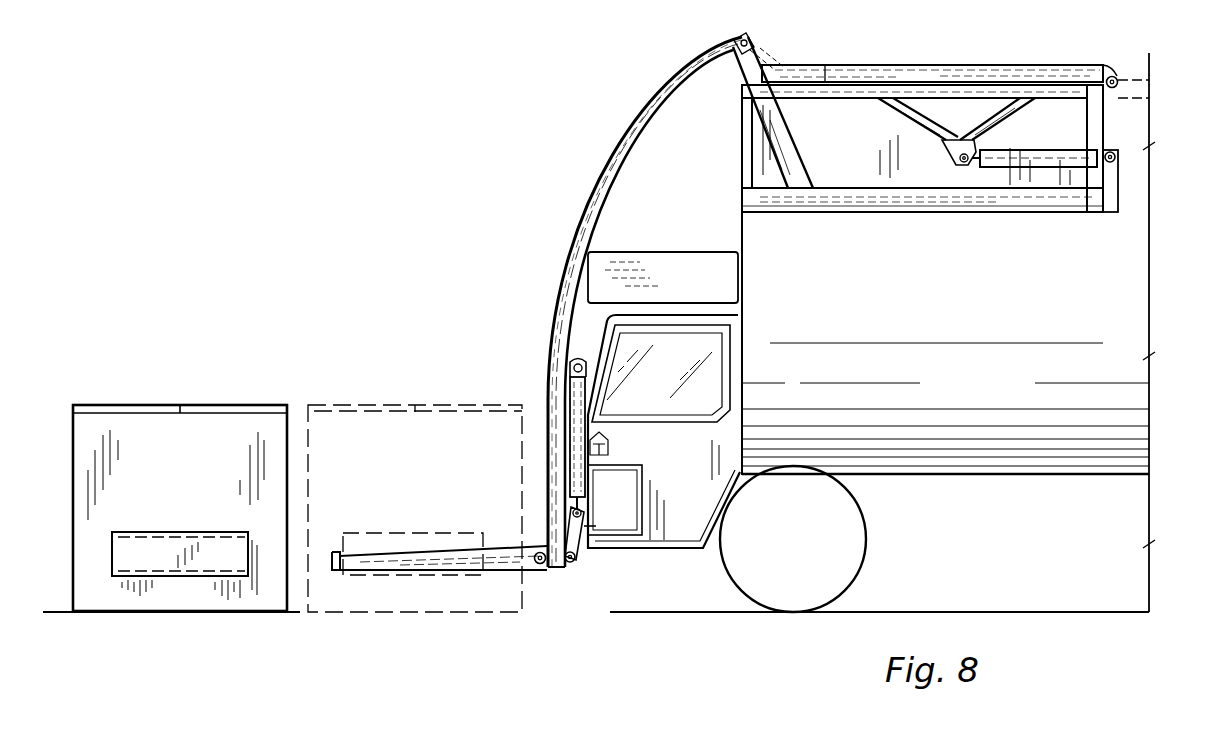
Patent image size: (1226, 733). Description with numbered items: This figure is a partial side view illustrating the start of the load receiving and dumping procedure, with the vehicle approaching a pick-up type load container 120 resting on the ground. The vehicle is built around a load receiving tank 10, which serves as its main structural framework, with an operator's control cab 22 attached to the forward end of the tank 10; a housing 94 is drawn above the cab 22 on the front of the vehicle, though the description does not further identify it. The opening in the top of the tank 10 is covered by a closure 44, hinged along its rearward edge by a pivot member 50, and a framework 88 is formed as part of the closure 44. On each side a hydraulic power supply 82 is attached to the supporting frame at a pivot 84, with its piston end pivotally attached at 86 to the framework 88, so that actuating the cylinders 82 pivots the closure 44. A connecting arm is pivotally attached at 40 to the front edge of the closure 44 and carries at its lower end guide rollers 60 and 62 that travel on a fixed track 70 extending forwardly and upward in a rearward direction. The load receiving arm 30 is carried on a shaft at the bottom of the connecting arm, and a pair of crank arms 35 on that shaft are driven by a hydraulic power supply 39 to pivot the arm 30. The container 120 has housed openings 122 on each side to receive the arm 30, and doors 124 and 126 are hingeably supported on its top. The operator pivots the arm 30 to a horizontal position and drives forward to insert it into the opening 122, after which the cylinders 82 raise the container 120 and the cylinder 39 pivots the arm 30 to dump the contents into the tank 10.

The load receiving tank 10 is at (960, 314).
The operator's control cab 22 is at (695, 482).
The load receiving arm 30 is at (340, 563).
The crank arms 35 is at (586, 526).
The hydraulic power supply 39 is at (575, 395).
The pivot 40 is at (748, 33).
The closure 44 is at (935, 65).
The pivot member 50 is at (1117, 78).
The guide roller 60 is at (542, 565).
The guide roller 62 is at (573, 563).
The fixed track 70 is at (656, 100).
The hydraulic power supply 82 is at (1065, 155).
The pivot 84 is at (1117, 160).
The pivot 86 is at (960, 162).
The framework 88 is at (986, 118).
The housing 94 is at (676, 252).
The pick-up load container 120 is at (158, 477).
The housed opening 122 is at (112, 555).
The door 124 is at (123, 405).
The door 126 is at (195, 405).